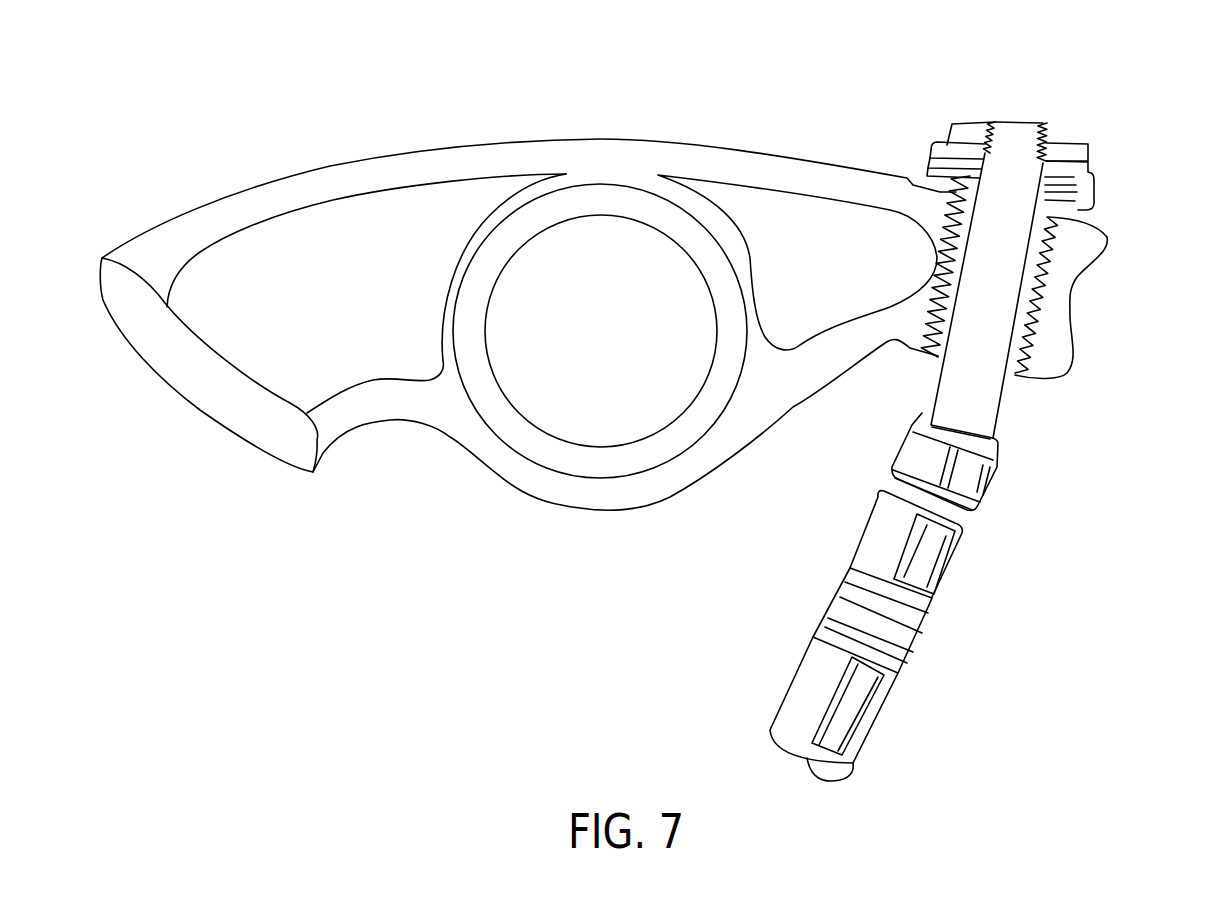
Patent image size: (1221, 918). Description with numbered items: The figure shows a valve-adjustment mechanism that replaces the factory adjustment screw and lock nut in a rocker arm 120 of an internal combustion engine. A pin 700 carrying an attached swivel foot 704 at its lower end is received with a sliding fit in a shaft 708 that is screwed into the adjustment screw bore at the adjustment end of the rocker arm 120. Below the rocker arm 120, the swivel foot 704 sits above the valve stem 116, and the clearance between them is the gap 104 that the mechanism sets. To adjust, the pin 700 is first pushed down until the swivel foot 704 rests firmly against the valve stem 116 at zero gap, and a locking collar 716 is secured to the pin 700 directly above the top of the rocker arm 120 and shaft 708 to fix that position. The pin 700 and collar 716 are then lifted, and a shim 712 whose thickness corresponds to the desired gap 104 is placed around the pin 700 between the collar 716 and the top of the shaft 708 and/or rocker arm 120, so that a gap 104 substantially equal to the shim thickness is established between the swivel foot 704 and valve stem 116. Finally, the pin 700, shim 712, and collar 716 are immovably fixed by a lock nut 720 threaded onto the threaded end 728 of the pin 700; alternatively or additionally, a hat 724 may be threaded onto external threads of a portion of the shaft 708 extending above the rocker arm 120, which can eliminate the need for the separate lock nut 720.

The rocker arm 120 is at (468, 118).
The pin 700 is at (1001, 250).
The shaft 708 is at (915, 373).
The threaded end 728 is at (1040, 130).
The lock nut 720 is at (980, 134).
The hat 724 is at (957, 150).
The collar 716 is at (953, 160).
The shim 712 is at (965, 163).
The swivel foot 704 is at (987, 480).
The gap 104 is at (868, 485).
The valve stem 116 is at (882, 539).